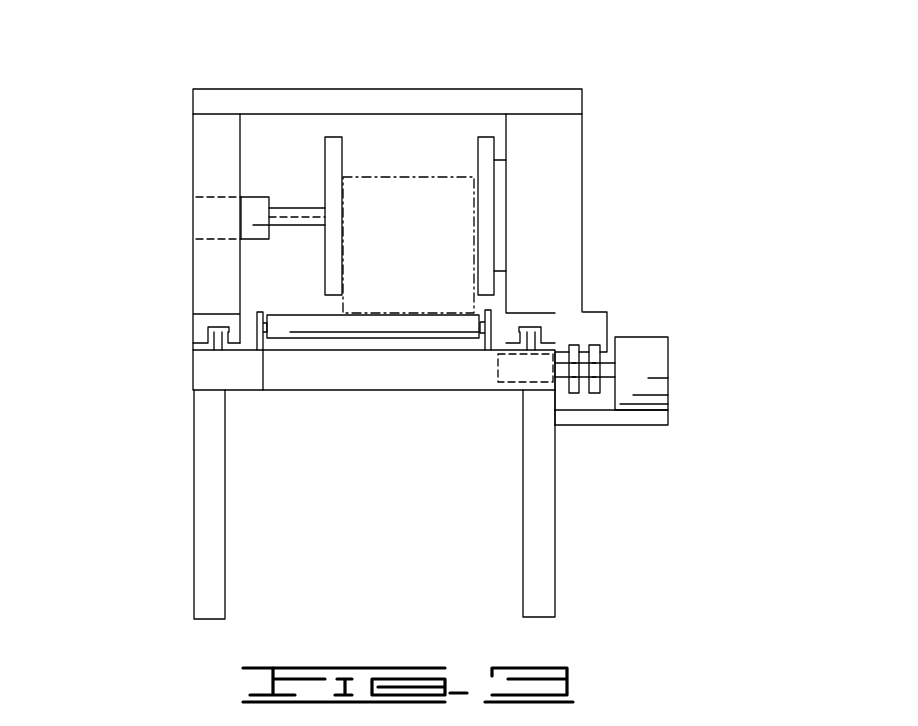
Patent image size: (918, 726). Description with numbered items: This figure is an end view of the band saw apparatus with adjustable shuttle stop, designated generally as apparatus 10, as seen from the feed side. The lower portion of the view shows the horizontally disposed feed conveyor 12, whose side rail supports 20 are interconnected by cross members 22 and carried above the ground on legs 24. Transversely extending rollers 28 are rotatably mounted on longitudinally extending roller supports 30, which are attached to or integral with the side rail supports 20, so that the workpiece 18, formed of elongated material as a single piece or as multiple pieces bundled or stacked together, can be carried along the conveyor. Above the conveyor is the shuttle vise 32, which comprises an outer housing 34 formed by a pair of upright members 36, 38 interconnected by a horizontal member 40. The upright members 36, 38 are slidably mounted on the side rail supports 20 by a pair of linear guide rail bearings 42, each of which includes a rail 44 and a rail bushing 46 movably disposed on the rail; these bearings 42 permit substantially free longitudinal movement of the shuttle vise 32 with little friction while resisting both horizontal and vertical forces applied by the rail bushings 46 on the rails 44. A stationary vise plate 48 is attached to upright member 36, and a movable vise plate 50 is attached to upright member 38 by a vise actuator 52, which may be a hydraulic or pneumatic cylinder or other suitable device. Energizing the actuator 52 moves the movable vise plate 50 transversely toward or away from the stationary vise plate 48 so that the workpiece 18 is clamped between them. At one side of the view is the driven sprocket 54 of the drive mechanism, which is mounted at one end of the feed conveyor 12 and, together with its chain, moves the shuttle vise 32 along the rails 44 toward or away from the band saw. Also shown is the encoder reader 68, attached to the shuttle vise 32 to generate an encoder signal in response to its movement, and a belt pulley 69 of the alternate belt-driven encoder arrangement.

The band saw apparatus with adjustable shuttle stop 10 is at (628, 126).
The feed conveyor 12 is at (182, 371).
The workpiece 18 is at (400, 174).
The side rail supports 20 is at (220, 385).
The cross members 22 is at (318, 380).
The legs 24 is at (194, 558).
The rollers 28 is at (399, 338).
The roller supports 30 is at (258, 310).
The shuttle vise 32 is at (478, 80).
The outer housing 34 is at (401, 195).
The upright member 36 is at (565, 228).
The upright member 38 is at (202, 141).
The horizontal member 40 is at (557, 100).
The linear guide rail bearings 42 is at (401, 309).
The rail 44 is at (213, 338).
The rail bushing 46 is at (210, 322).
The stationary vise plate 48 is at (487, 198).
The movable vise plate 50 is at (334, 142).
The vise actuator 52 is at (262, 200).
The driven sprocket 54 is at (573, 393).
The encoder reader 68 is at (660, 360).
The belt pulley 69 is at (597, 393).